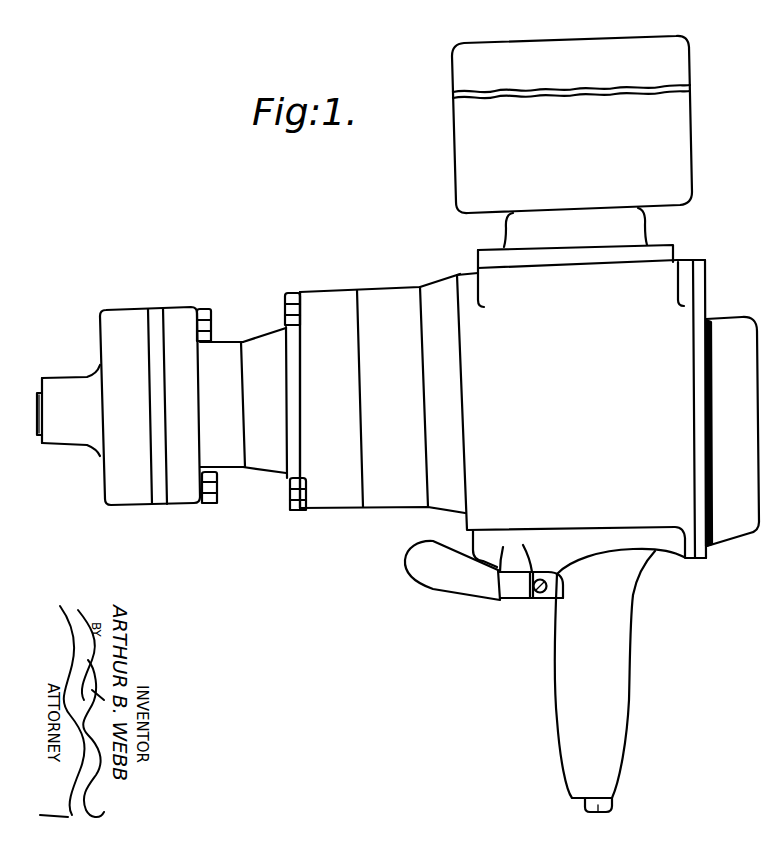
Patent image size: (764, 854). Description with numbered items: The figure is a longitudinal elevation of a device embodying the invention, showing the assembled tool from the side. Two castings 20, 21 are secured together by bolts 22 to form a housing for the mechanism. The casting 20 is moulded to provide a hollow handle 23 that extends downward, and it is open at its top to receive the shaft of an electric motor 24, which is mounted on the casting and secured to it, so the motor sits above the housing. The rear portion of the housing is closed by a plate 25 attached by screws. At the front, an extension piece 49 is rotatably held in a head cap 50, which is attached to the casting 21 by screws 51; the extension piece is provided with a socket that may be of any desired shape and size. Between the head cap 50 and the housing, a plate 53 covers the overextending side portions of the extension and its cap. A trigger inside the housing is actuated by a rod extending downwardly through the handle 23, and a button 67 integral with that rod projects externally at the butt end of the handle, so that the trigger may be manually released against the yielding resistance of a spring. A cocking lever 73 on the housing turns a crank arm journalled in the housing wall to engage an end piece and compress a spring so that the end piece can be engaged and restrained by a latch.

The casting 20 is at (581, 409).
The casting 21 is at (382, 393).
The bolts 22 is at (289, 294).
The hollow handle 23 is at (617, 684).
The electric motor 24 is at (572, 124).
The plate 25 is at (732, 431).
The extension piece 49 is at (38, 442).
The head cap 50 is at (150, 406).
The screws 51 is at (202, 309).
The plate 53 is at (161, 503).
The button 67 is at (613, 804).
The cocking lever 73 is at (484, 565).